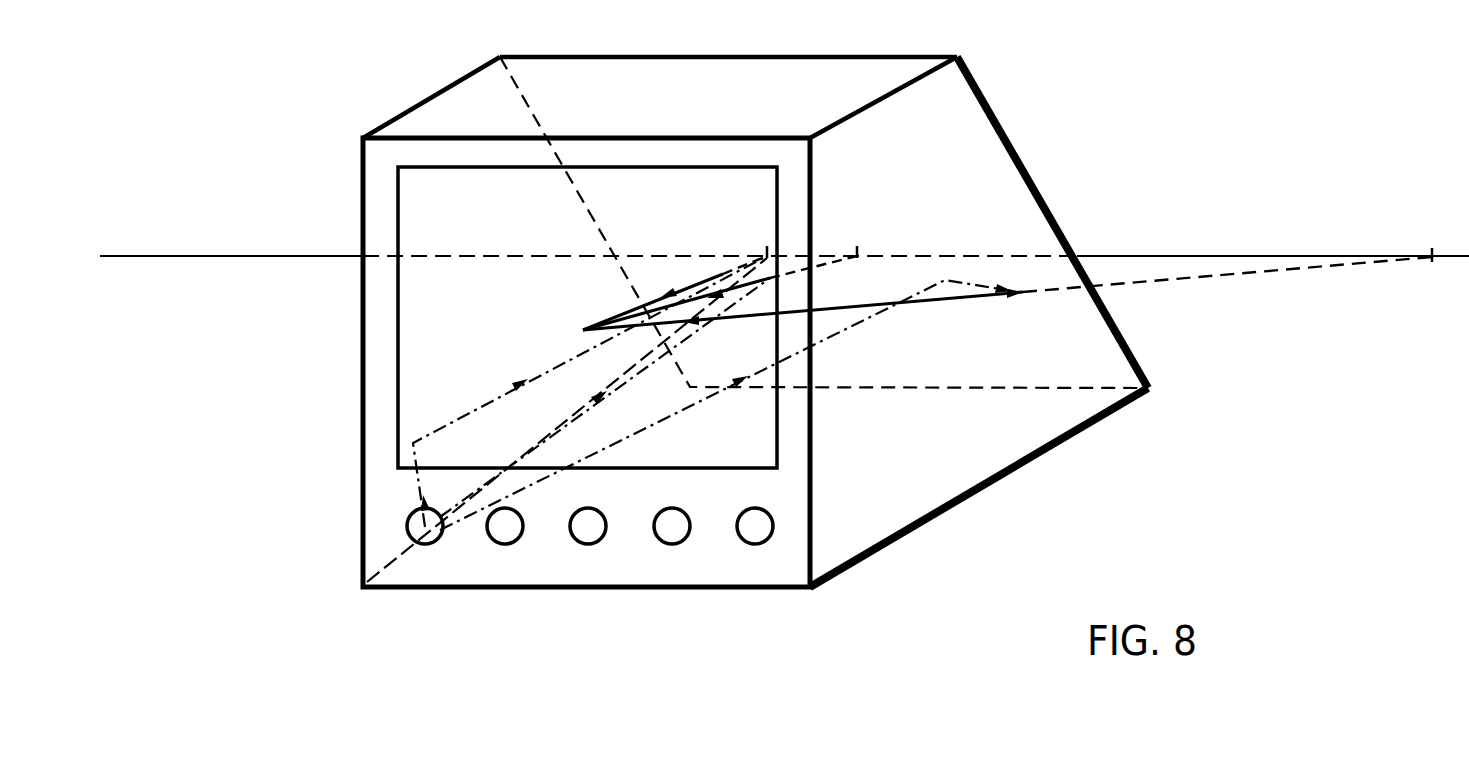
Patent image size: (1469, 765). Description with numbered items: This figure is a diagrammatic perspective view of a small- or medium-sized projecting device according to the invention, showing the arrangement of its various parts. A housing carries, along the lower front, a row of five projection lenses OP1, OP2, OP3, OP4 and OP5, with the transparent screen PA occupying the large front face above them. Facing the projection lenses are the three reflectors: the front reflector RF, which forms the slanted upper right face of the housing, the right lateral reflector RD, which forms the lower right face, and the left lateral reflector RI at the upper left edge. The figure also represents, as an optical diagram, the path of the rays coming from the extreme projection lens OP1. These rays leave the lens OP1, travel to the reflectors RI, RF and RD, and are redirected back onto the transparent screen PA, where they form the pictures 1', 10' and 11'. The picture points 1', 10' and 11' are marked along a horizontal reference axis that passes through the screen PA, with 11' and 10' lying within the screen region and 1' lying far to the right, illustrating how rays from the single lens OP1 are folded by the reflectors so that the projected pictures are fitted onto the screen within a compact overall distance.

The left lateral reflector RI is at (417, 105).
The front reflector RF is at (1007, 133).
The right lateral reflector RD is at (938, 478).
The transparent screen PA is at (398, 331).
The projection lens OP1 is at (415, 544).
The projection lens OP2 is at (502, 544).
The projection lens OP3 is at (584, 544).
The projection lens OP4 is at (669, 544).
The projection lens OP5 is at (750, 544).
The picture 11' is at (761, 237).
The picture 10' is at (859, 237).
The picture 1' is at (1433, 240).